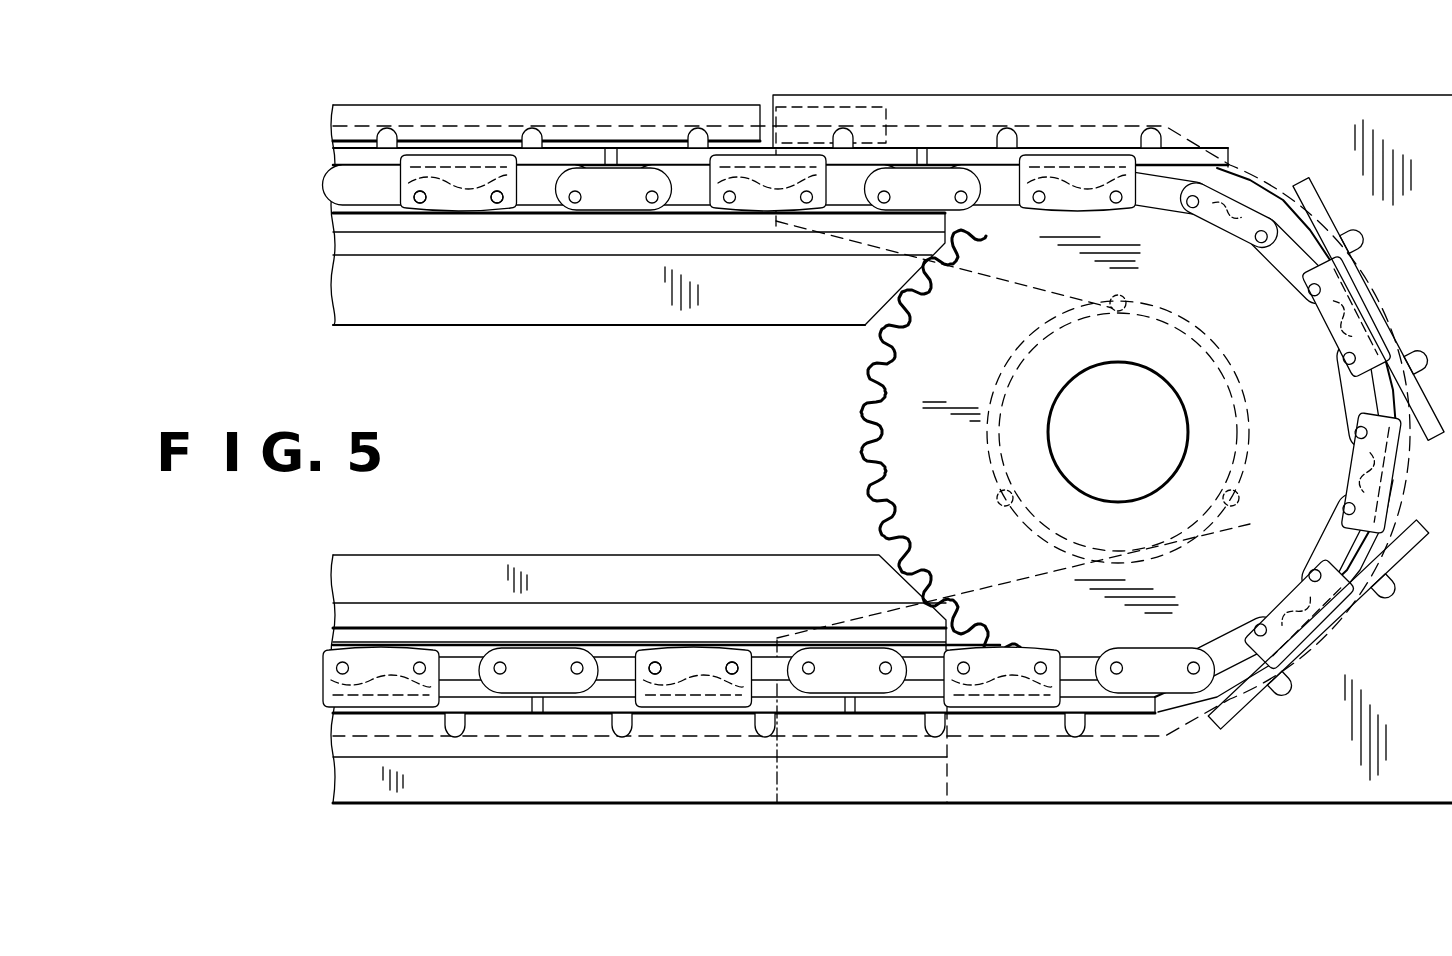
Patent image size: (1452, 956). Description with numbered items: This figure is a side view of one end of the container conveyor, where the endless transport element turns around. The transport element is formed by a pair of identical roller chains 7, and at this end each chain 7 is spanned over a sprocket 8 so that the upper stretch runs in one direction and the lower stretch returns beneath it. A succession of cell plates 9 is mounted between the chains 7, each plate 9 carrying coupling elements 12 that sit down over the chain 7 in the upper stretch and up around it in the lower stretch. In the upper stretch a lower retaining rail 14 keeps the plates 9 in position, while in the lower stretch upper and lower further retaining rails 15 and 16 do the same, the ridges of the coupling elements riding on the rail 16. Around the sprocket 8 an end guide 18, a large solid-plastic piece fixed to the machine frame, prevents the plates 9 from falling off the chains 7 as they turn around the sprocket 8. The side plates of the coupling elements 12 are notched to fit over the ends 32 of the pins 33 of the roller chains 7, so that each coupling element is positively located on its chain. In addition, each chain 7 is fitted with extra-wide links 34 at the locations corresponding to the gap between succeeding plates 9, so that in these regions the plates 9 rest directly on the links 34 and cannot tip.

The roller chain 7 is at (382, 180).
The sprocket 8 is at (885, 376).
The cell plate 9 is at (565, 150).
The coupling element 12 is at (465, 162).
The lower retaining rail 14 is at (381, 223).
The upper further retaining rail 15 is at (583, 622).
The lower further retaining rail 16 is at (710, 747).
The end guide 18 is at (1193, 120).
The pin end 32 is at (490, 204).
The pin 33 is at (435, 632).
The extra-wide link 34 is at (626, 173).